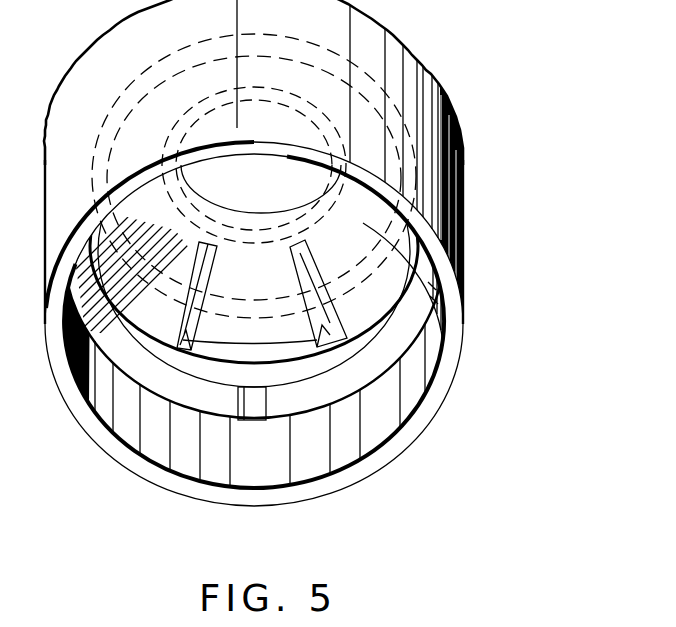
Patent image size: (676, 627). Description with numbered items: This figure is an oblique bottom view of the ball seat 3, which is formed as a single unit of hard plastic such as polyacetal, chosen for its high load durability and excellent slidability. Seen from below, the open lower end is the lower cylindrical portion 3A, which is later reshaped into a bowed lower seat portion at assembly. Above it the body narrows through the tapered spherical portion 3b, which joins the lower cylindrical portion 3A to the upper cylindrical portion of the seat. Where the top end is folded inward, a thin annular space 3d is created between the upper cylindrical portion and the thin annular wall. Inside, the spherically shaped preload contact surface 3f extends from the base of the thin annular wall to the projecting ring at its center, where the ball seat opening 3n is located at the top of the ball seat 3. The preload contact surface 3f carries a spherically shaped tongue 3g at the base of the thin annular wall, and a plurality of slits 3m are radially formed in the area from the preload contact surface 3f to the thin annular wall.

The ball seat 3 is at (455, 84).
The lower cylindrical portion 3A is at (363, 472).
The tapered spherical portion 3b is at (393, 352).
The thin annular space 3d is at (400, 304).
The preload contact surface 3f is at (368, 228).
The spherically shaped tongue 3g is at (395, 262).
The slits 3m is at (333, 330).
The ball seat opening 3n is at (262, 183).